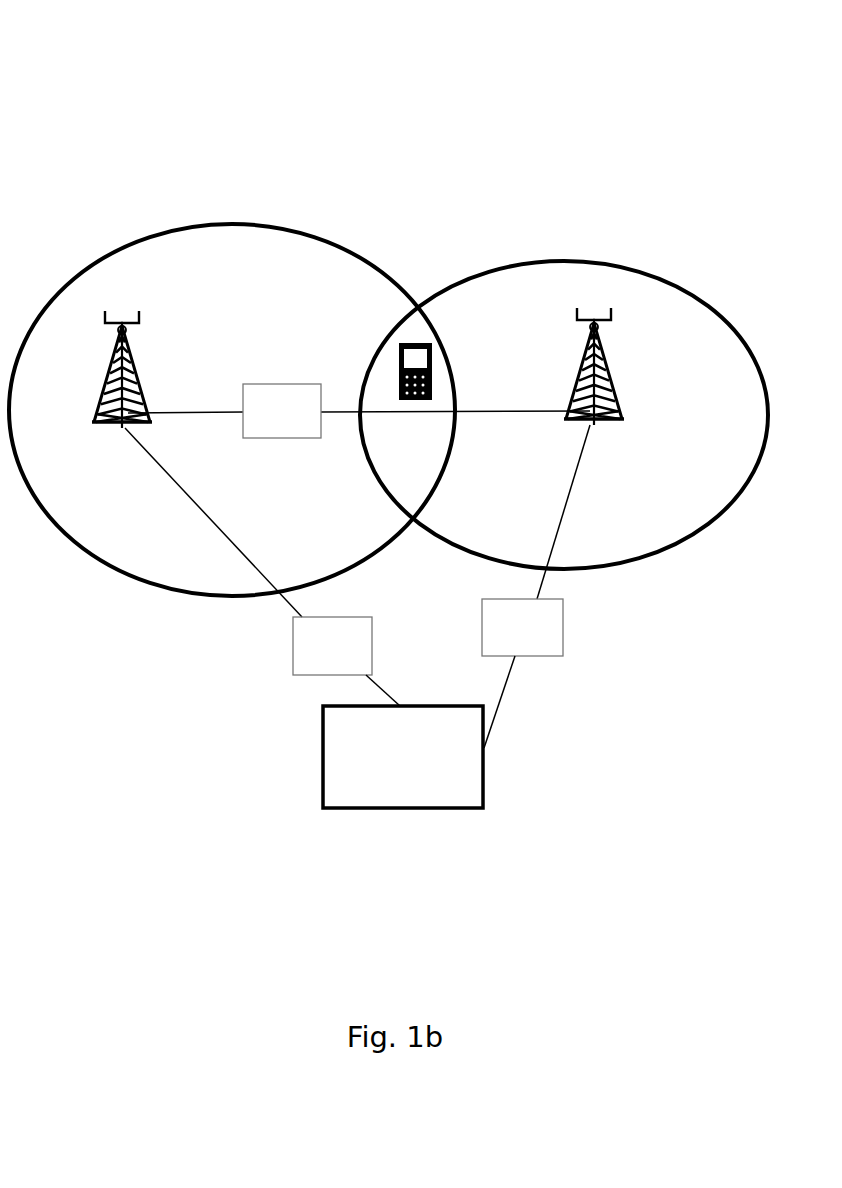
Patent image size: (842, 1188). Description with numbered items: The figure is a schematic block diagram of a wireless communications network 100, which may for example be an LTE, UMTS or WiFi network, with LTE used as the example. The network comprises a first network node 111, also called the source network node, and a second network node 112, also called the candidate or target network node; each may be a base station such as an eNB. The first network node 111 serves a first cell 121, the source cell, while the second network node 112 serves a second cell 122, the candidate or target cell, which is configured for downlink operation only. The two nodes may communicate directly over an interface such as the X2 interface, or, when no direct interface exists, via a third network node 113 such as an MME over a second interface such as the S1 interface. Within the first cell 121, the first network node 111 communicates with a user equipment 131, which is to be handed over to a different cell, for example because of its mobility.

The wireless communications network 100 is at (242, 115).
The first network node 111 is at (606, 348).
The second network node 112 is at (104, 324).
The third network node 113 is at (482, 760).
The first cell 121 is at (457, 550).
The second cell 122 is at (92, 553).
The user equipment 131 is at (421, 343).